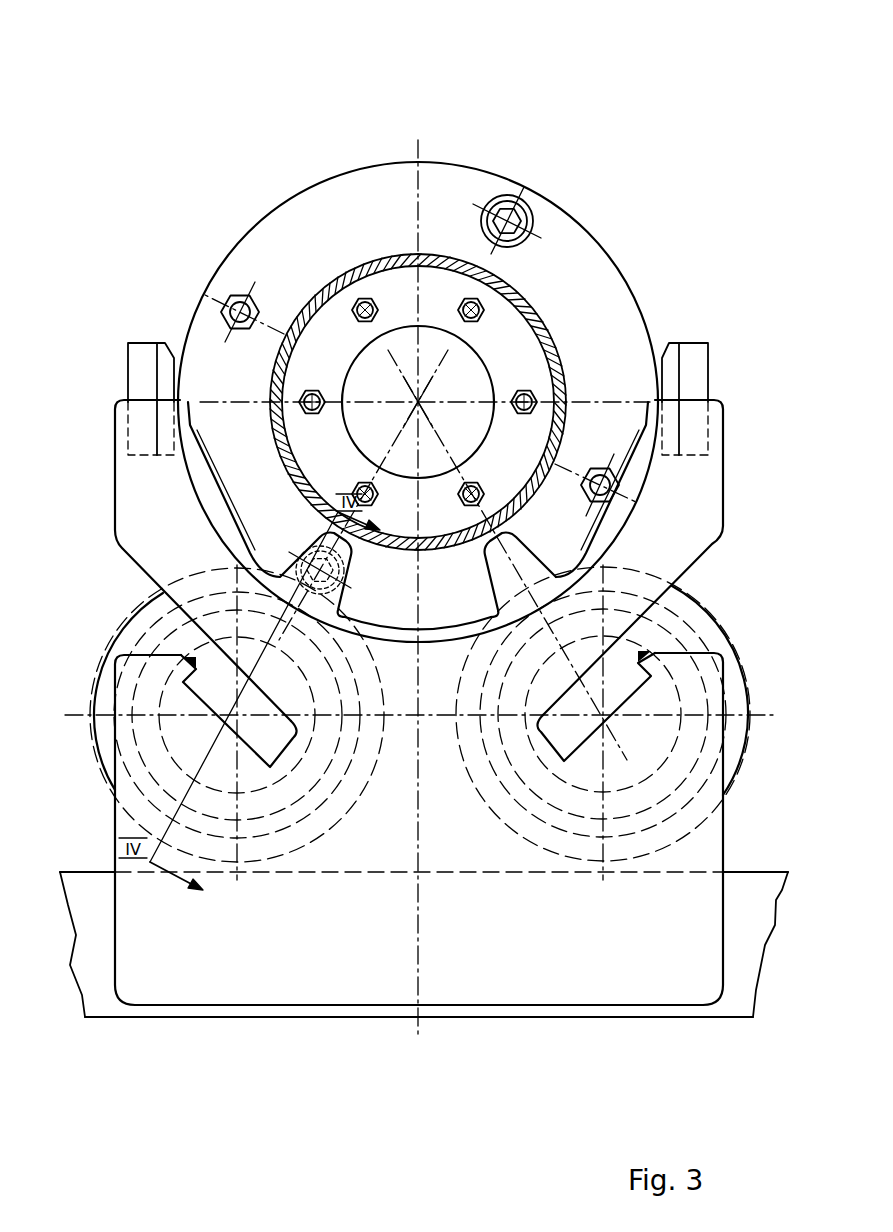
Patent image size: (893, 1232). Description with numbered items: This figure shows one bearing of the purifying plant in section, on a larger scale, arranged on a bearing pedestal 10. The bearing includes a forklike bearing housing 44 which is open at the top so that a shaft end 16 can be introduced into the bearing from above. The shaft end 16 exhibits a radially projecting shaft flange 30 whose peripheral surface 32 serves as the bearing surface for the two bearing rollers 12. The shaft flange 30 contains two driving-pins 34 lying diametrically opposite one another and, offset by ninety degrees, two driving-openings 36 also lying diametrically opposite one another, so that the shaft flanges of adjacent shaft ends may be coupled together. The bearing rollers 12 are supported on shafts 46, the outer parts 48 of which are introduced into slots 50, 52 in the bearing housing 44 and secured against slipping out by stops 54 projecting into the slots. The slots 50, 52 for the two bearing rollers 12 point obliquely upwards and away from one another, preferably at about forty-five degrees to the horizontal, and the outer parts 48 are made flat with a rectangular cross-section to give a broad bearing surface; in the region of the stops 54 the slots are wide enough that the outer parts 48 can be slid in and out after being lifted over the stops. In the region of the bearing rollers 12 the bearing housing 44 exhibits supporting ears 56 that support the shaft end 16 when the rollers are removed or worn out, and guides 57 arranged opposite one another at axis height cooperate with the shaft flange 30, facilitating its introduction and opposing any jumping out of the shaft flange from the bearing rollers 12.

The bearing pedestal 10 is at (95, 1005).
The bearing rollers 12 is at (112, 608).
The shaft end 16 is at (326, 285).
The shaft flange 30 is at (403, 185).
The peripheral surface 32 is at (458, 162).
The driving-pins 34 is at (505, 200).
The driving-openings 36 is at (519, 146).
The bearing housing 44 is at (390, 855).
The shafts 46 is at (668, 663).
The outer parts 48 is at (225, 703).
The slot 50 is at (282, 728).
The slot 52 is at (558, 723).
The stops 54 is at (178, 668).
The supporting ears 56 is at (522, 552).
The guides 57 is at (672, 375).